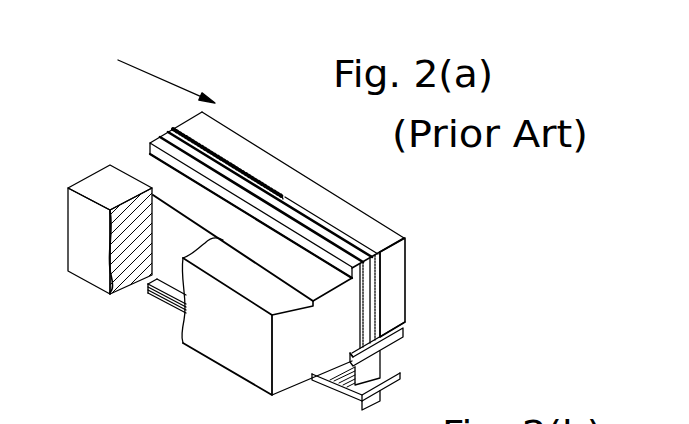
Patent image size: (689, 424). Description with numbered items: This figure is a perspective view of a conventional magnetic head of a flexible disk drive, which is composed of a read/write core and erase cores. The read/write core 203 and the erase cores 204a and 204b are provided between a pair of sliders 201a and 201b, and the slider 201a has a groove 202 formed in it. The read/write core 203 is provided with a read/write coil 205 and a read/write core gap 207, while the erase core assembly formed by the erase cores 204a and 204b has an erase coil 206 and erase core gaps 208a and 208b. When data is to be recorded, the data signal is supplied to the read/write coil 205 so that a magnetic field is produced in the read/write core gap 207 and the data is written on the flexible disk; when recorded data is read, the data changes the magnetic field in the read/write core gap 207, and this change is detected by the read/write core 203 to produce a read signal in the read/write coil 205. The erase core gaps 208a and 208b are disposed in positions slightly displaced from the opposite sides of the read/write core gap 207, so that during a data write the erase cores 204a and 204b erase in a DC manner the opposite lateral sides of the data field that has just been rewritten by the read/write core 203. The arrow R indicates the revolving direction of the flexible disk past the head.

The arrow R is at (163, 79).
The slider 201a is at (398, 279).
The slider 201b is at (218, 330).
The groove 202 is at (325, 287).
The read/write core 203 is at (220, 152).
The erase core 204a is at (338, 222).
The erase core 204b is at (355, 240).
The read/write coil 205 is at (152, 296).
The erase coil 206 is at (382, 355).
The read/write core gap 207 is at (280, 174).
The erase core gap 208a is at (305, 190).
The erase core gap 208b is at (233, 209).